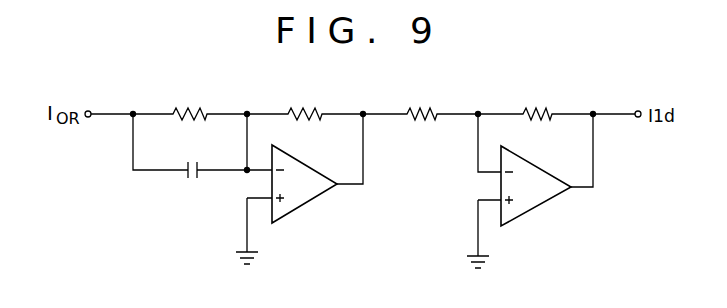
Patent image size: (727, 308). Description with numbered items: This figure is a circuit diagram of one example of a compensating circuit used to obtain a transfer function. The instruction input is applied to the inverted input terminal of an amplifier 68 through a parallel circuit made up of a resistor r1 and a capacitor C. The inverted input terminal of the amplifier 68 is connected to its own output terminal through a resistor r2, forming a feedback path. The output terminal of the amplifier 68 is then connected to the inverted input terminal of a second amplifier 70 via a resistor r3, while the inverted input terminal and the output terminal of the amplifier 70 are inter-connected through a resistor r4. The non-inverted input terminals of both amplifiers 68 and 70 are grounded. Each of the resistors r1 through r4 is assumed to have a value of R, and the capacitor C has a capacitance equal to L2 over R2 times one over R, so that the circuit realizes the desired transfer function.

The amplifier 68 is at (318, 195).
The amplifier 70 is at (554, 196).
The resistor r1 is at (181, 107).
The resistor r2 is at (296, 107).
The resistor r3 is at (412, 107).
The resistor r4 is at (527, 107).
The capacitor C is at (204, 212).